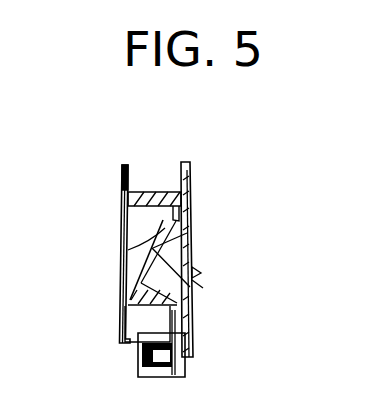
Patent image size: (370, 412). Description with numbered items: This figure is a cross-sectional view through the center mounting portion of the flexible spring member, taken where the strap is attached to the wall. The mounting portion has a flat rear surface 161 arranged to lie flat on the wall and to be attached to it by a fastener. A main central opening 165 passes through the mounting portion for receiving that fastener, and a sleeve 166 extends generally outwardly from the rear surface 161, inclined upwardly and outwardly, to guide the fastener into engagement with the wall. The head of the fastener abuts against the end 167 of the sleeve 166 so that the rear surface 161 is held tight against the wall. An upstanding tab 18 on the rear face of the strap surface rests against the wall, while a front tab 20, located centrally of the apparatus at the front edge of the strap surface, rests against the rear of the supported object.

The upstanding tab 18 is at (123, 175).
The front tab 20 is at (190, 173).
The sleeve 166 is at (187, 228).
The rear surface 161 is at (187, 248).
The main central opening 165 is at (170, 280).
The end of the sleeve 167 is at (120, 250).